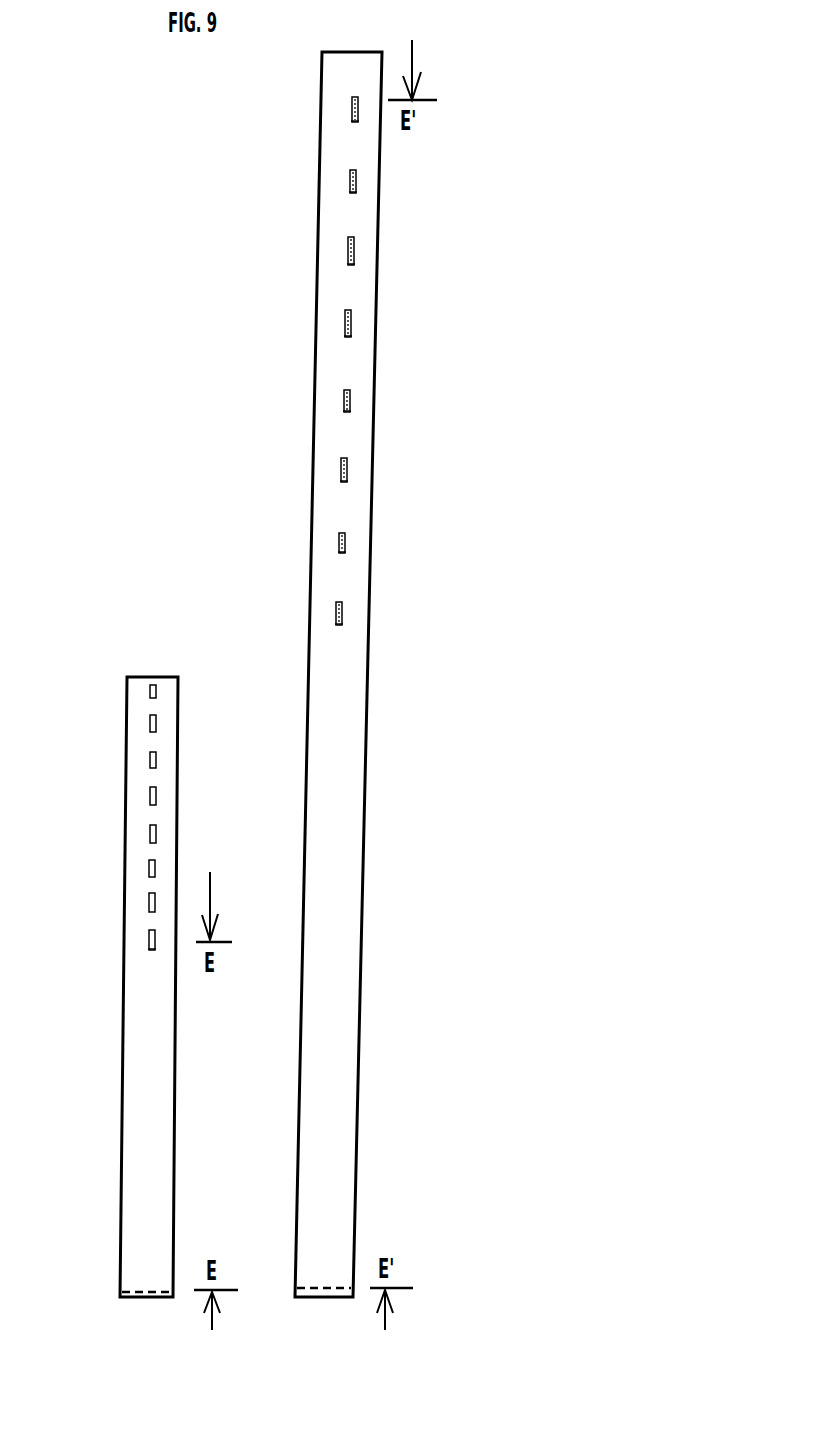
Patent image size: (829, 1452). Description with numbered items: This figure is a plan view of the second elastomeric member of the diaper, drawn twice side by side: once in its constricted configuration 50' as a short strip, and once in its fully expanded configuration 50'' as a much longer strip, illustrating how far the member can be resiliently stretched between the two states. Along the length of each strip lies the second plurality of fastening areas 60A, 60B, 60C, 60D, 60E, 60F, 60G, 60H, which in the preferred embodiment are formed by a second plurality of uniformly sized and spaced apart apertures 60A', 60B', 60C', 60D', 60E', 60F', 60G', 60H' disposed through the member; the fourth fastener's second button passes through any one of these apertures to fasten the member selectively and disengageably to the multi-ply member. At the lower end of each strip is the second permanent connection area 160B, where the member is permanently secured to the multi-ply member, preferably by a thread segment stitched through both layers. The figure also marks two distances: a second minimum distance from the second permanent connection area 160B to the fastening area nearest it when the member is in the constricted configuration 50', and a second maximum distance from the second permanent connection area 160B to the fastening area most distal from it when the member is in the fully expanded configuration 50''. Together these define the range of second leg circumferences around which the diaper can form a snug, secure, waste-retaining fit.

The fully expanded configuration 50'' is at (243, 674).
The constricted configuration 50' is at (130, 946).
The fastening area 60A is at (199, 722).
The fastening area 60B is at (202, 681).
The fastening area 60C is at (248, 637).
The fastening area 60D is at (250, 588).
The fastening area 60E is at (250, 529).
The fastening area 60F is at (252, 468).
The fastening area 60G is at (252, 422).
The fastening area 60H is at (254, 376).
The aperture 60A' is at (263, 783).
The aperture 60B' is at (410, 542).
The aperture 60C' is at (403, 469).
The aperture 60D' is at (409, 404).
The aperture 60E' is at (402, 324).
The aperture 60F' is at (406, 247).
The aperture 60G' is at (406, 198).
The aperture 60H' is at (408, 147).
The second permanent connection area 160B is at (140, 1288).